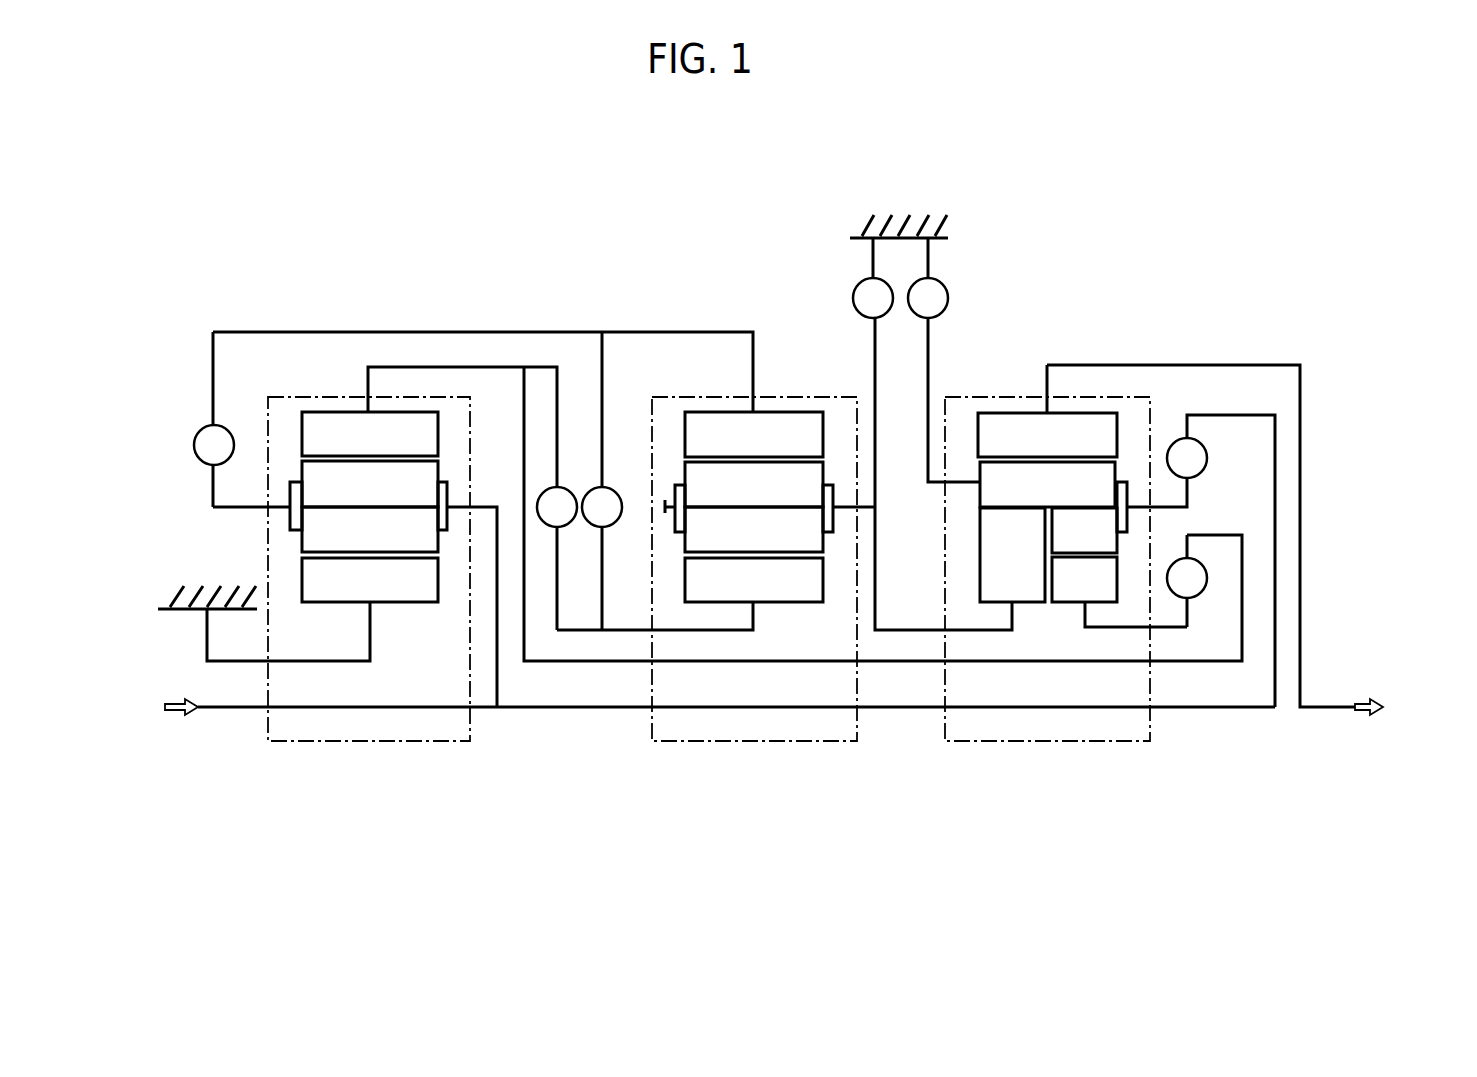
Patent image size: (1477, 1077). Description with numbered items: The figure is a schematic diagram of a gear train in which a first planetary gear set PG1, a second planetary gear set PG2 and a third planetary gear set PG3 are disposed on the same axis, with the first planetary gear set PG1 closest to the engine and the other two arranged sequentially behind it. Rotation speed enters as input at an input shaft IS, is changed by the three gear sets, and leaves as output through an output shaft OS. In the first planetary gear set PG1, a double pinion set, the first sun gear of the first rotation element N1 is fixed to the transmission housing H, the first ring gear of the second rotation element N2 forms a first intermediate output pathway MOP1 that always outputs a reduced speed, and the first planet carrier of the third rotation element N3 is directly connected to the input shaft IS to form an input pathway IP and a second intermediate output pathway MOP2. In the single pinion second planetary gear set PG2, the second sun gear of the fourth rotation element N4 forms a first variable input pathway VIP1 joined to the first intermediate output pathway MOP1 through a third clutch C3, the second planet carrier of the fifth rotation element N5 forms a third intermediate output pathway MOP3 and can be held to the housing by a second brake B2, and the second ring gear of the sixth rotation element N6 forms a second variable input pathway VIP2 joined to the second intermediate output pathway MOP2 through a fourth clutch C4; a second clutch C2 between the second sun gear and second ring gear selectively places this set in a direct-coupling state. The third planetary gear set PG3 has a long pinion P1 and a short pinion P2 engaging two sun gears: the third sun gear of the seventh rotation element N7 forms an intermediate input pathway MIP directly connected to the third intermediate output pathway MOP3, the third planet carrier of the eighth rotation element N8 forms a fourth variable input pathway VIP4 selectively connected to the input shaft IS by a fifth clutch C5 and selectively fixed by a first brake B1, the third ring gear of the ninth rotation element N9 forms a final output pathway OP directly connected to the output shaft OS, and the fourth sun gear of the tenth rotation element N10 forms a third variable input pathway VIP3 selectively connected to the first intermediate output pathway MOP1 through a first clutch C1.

The first planetary gear set PG1 is at (370, 760).
The second planetary gear set PG2 is at (755, 760).
The third planetary gear set PG3 is at (1047, 760).
The first rotation element N1 is at (322, 609).
The second rotation element N2 is at (370, 434).
The third rotation element N3 is at (240, 508).
The fourth rotation element N4 is at (754, 580).
The fifth rotation element N5 is at (667, 507).
The sixth rotation element N6 is at (754, 434).
The seventh rotation element N7 is at (1012, 555).
The eighth rotation element N8 is at (938, 480).
The ninth rotation element N9 is at (1047, 411).
The tenth rotation element N10 is at (1119, 592).
The long pinion P1 is at (1047, 484).
The short pinion P2 is at (1084, 530).
The first clutch C1 is at (1187, 581).
The second clutch C2 is at (602, 481).
The third clutch C3 is at (557, 558).
The fourth clutch C4 is at (214, 419).
The fifth clutch C5 is at (1201, 561).
The first brake B1 is at (944, 360).
The second brake B2 is at (873, 278).
The transmission housing H is at (170, 602).
The input shaft IS is at (221, 710).
The output shaft OS is at (1325, 710).
The input pathway IP is at (483, 645).
The final output pathway OP is at (1307, 657).
The intermediate input pathway MIP is at (1022, 607).
The first intermediate output pathway MOP1 is at (353, 380).
The second intermediate output pathway MOP2 is at (222, 525).
The third intermediate output pathway MOP3 is at (877, 500).
The first variable input pathway VIP1 is at (538, 617).
The second variable input pathway VIP2 is at (765, 371).
The third variable input pathway VIP3 is at (1160, 633).
The fourth variable input pathway VIP4 is at (1160, 512).
The element input is at (155, 707).
The element output is at (1405, 707).